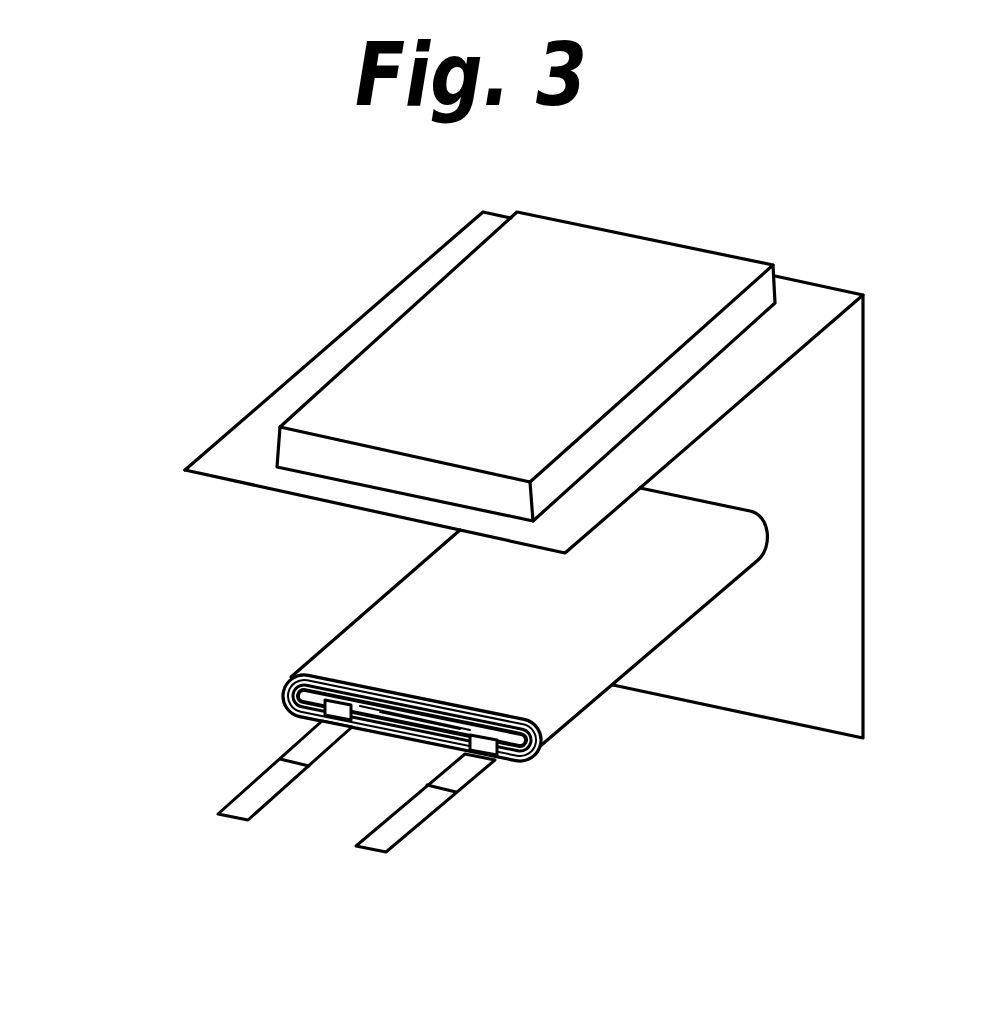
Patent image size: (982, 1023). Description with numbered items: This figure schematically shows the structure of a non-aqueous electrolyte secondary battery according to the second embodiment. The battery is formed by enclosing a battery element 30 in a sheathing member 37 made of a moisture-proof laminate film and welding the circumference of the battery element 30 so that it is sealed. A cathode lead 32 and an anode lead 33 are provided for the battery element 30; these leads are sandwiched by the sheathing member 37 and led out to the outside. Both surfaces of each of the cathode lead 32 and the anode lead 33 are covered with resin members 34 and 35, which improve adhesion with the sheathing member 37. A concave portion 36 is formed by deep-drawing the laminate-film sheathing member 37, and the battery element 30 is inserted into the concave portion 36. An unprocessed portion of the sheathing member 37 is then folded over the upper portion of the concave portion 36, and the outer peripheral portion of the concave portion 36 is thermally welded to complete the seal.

The battery element 30 is at (318, 650).
The cathode lead 32 is at (361, 843).
The anode lead 33 is at (225, 807).
The resin member 34 is at (433, 780).
The resin member 35 is at (301, 740).
The concave portion 36 is at (473, 277).
The sheathing member 37 is at (318, 353).